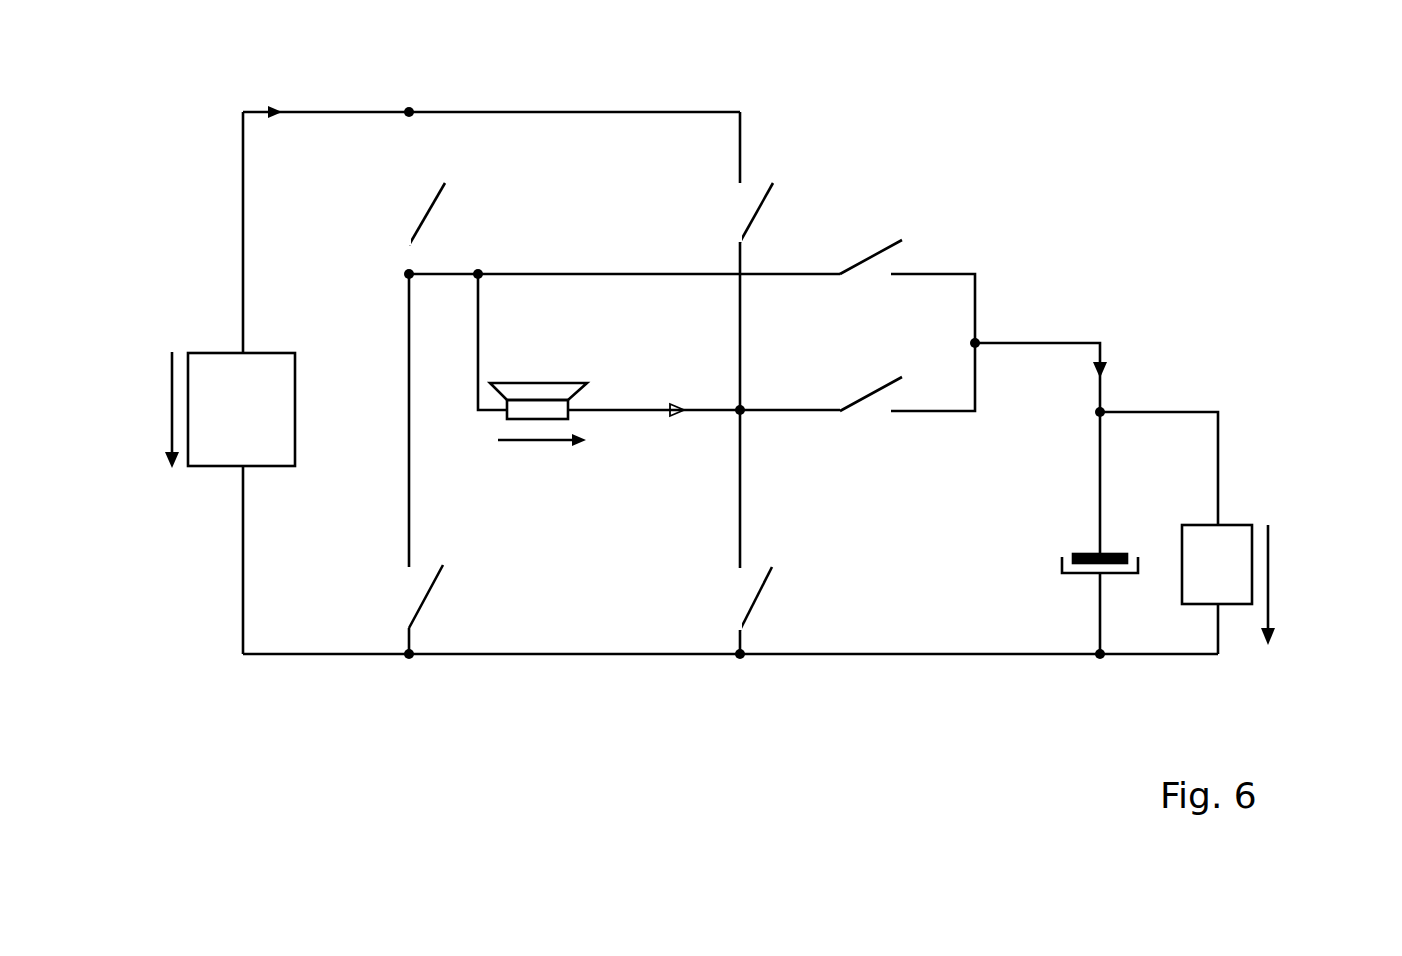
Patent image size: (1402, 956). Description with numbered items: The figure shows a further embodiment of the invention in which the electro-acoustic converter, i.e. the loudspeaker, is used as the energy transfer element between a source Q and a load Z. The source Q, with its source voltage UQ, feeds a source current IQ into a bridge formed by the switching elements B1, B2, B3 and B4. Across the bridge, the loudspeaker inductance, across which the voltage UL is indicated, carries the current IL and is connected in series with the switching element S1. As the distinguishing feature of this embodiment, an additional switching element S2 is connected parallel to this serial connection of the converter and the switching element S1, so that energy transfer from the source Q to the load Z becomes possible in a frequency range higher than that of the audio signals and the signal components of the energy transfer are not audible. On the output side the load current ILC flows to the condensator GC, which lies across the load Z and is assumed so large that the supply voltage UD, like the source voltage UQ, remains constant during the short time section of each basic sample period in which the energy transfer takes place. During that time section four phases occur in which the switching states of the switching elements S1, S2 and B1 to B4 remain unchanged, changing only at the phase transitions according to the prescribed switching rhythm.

The source current IQ is at (302, 81).
The switching element B1 is at (352, 194).
The switching element B2 is at (347, 464).
The switching element B3 is at (681, 194).
The switching element B4 is at (680, 532).
The source Q is at (241, 409).
The source voltage UQ is at (123, 410).
The inductive load / voltage UL is at (609, 391).
The current through the inductance IL is at (674, 438).
The switching element S1 is at (857, 424).
The additional switching element S2 is at (907, 305).
The load current ILC is at (1093, 377).
The condensator GC is at (1035, 533).
The load Z is at (1176, 533).
The supply voltage UD is at (1321, 585).